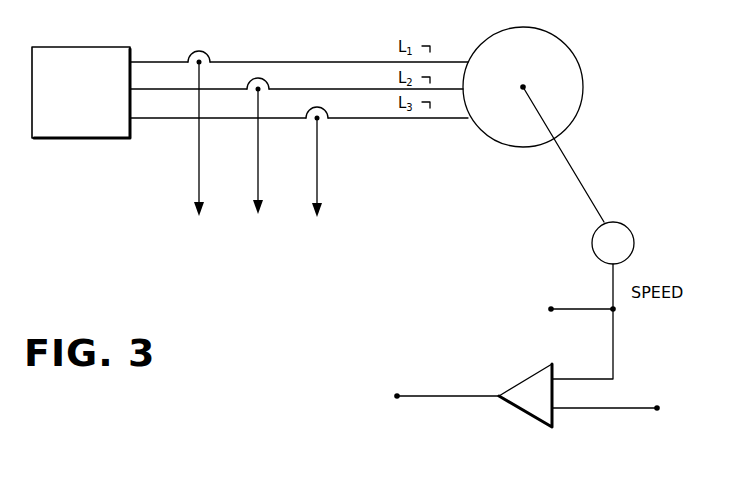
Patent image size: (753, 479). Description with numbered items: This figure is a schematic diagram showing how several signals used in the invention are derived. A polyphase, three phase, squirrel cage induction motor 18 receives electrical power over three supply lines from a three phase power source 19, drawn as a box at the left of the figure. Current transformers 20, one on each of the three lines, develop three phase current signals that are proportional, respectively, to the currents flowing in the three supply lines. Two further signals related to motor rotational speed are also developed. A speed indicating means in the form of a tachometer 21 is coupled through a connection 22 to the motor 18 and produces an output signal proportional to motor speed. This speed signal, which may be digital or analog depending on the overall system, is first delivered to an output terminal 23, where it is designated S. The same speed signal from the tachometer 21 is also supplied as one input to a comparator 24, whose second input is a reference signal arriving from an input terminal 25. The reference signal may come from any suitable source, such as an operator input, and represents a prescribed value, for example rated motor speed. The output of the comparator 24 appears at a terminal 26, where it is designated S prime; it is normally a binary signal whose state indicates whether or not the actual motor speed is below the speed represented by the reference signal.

The squirrel cage induction motor 18 is at (583, 90).
The power source 19 is at (86, 45).
The current transformers 20 is at (220, 43).
The tachometer 21 is at (636, 240).
The connection 22 is at (585, 188).
The output terminal 23 is at (552, 303).
The comparator 24 is at (528, 419).
The input terminal 25 is at (656, 402).
The terminal 26 is at (399, 404).